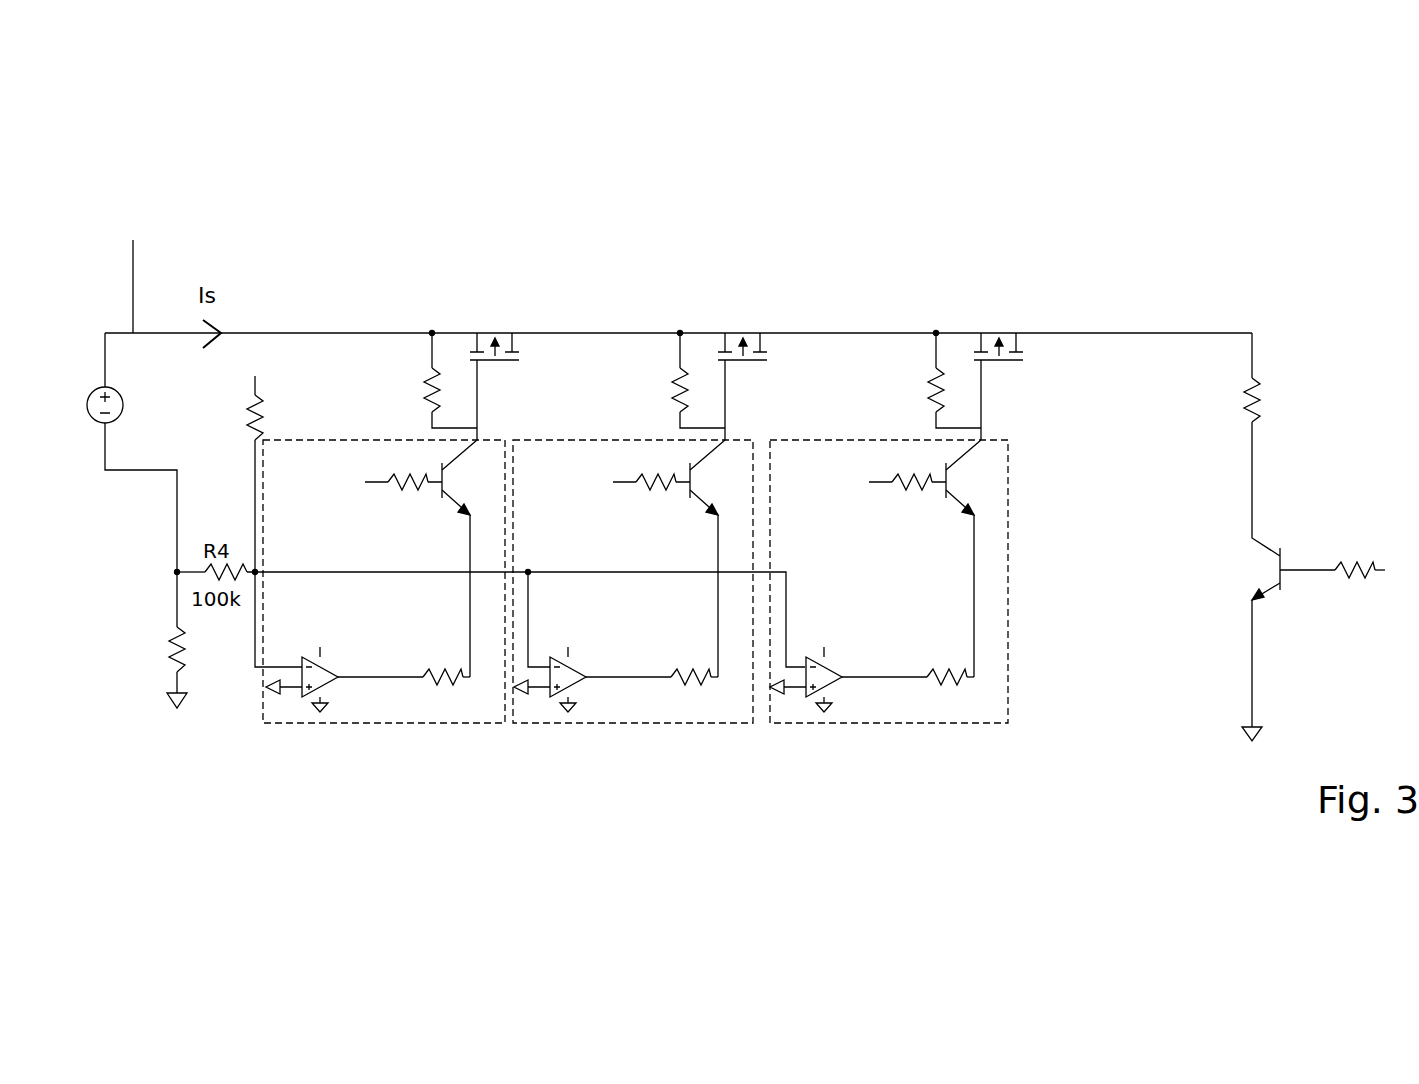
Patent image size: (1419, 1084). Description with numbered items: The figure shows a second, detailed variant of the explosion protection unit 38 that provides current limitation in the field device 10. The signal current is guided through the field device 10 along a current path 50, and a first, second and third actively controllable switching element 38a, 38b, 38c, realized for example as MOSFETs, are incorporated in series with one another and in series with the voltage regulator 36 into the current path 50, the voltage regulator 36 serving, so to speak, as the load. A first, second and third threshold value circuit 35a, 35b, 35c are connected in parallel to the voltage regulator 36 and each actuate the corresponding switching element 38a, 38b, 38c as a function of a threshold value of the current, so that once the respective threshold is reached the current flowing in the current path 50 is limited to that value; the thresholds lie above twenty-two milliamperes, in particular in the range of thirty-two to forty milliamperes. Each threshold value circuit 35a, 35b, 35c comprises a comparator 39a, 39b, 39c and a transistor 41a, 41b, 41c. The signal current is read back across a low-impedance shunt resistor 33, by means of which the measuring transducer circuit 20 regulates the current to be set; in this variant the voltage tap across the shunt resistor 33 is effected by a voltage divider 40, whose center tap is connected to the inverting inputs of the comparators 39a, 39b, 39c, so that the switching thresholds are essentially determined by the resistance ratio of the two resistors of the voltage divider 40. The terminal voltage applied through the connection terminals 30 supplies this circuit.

The field device 10 is at (1268, 407).
The measuring transducer circuit 20 is at (192, 649).
The connection terminal 30 is at (132, 480).
The shunt resistor 33 is at (155, 648).
The first threshold value circuit 35a is at (328, 438).
The second threshold value circuit 35b is at (633, 535).
The third threshold value circuit 35c is at (889, 535).
The voltage regulator 36 is at (1272, 528).
The explosion protection unit 38 is at (1242, 260).
The first switching element 38a is at (516, 260).
The second switching element 38b is at (712, 307).
The third switching element 38c is at (965, 307).
The comparator 39a is at (336, 630).
The comparator 39b is at (616, 644).
The comparator 39c is at (872, 654).
The voltage divider 40 is at (245, 428).
The transistor 41a is at (453, 518).
The transistor 41b is at (669, 558).
The transistor 41c is at (925, 558).
The current path 50 is at (1164, 330).